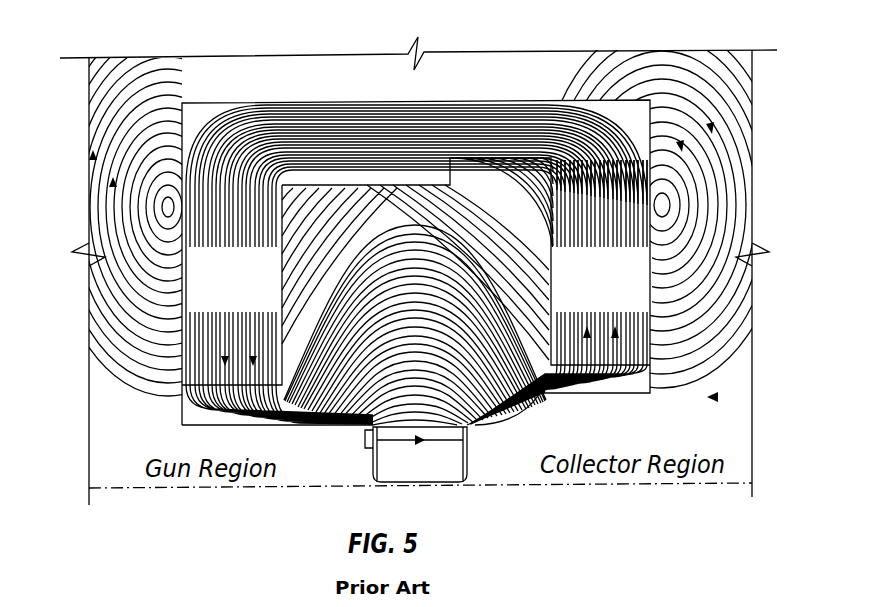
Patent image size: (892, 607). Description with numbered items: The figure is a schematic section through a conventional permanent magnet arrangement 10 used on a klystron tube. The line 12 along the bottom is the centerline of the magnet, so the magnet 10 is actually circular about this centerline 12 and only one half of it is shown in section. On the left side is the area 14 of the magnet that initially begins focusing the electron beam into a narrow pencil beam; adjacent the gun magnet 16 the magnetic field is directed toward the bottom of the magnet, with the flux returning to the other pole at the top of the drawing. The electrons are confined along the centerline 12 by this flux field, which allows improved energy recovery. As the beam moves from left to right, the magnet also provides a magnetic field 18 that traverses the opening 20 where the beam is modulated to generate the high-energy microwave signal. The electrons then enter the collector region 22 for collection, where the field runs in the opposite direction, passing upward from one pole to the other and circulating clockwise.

The permanent magnet arrangement 10 is at (226, 27).
The centerline 12 is at (165, 489).
The area 14 is at (220, 338).
The gun magnet 16 is at (268, 97).
The magnetic field 18 is at (440, 484).
The opening 20 is at (365, 438).
The collector region 22 is at (655, 268).